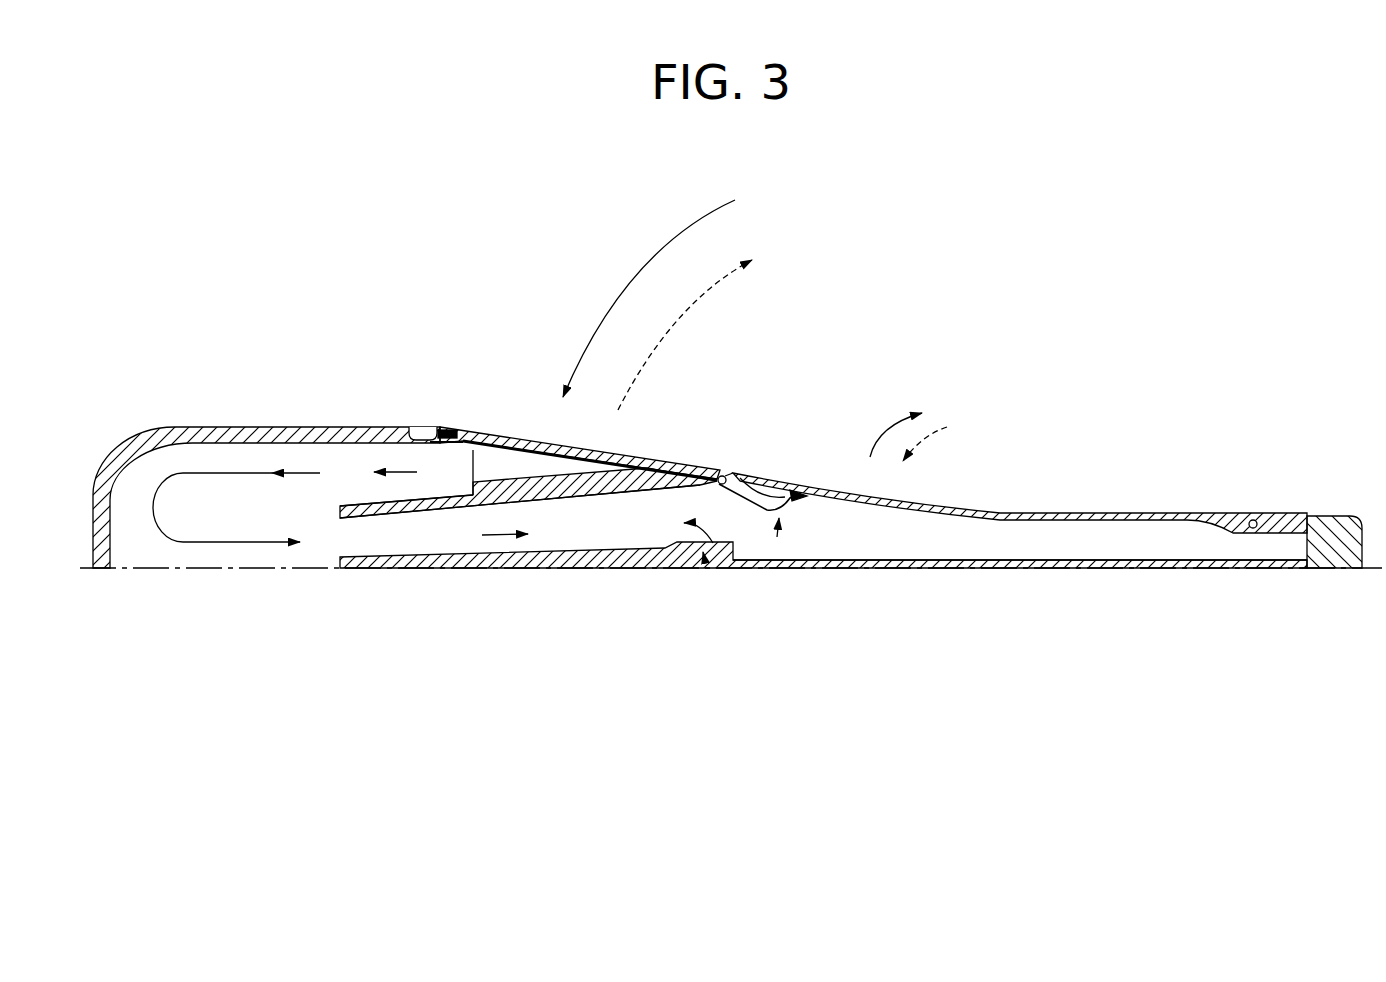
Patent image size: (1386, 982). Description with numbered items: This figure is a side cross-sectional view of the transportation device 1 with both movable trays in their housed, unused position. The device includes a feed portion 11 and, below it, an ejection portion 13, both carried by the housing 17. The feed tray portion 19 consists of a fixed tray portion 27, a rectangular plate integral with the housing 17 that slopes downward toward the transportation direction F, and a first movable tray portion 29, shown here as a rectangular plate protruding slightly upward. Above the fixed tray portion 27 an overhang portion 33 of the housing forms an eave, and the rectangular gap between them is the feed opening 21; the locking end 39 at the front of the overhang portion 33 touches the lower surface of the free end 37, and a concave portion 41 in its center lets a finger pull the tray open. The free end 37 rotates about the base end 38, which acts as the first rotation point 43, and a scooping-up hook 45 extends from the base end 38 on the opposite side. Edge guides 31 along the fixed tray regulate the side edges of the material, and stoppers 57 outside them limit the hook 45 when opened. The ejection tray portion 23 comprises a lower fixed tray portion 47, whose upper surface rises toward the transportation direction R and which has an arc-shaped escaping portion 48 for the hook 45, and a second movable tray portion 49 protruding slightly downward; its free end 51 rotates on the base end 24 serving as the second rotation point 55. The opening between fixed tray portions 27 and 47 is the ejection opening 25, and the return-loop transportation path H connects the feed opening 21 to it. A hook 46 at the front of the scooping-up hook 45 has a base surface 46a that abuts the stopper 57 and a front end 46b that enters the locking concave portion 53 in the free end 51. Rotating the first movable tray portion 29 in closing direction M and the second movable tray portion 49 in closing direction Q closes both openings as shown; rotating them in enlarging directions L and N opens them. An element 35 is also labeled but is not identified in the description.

The transportation device 1 is at (1050, 297).
The feed portion 11 is at (690, 462).
The ejection portion 13 is at (1014, 505).
The housing 17 is at (252, 442).
The feed tray portion 19 is at (545, 337).
The feed opening 21 is at (459, 465).
The ejection tray portion 23 is at (665, 681).
The base end 24 is at (1229, 518).
The ejection opening 25 is at (723, 500).
The fixed tray portion 27 is at (360, 512).
The first movable tray portion 29 is at (481, 422).
The edge guides 31 is at (573, 462).
The overhang portion 33 is at (392, 427).
The front end portion 35 is at (163, 422).
The free end 37 is at (452, 428).
The base end 38 is at (757, 500).
The locking end 39 is at (458, 446).
The concave portion 41 is at (422, 428).
The first rotation point 43 is at (721, 476).
The scooping-up hook 45 is at (790, 503).
The hook 46 is at (808, 498).
The base surface 46a is at (803, 503).
The front end 46b is at (812, 490).
The fixed tray portion 47 is at (592, 560).
The escaping portion 48 is at (720, 512).
The second movable tray portion 49 is at (1158, 507).
The free end 51 is at (738, 473).
The locking concave portion 53 is at (792, 484).
The second rotation point 55 is at (1256, 520).
The stoppers 57 is at (577, 482).
The transportation path H is at (183, 545).
The transportation direction F is at (372, 440).
The transportation direction R is at (500, 537).
The closing direction M is at (621, 283).
The enlarging direction L is at (700, 300).
The closing direction Q is at (883, 433).
The enlarging direction N is at (923, 442).